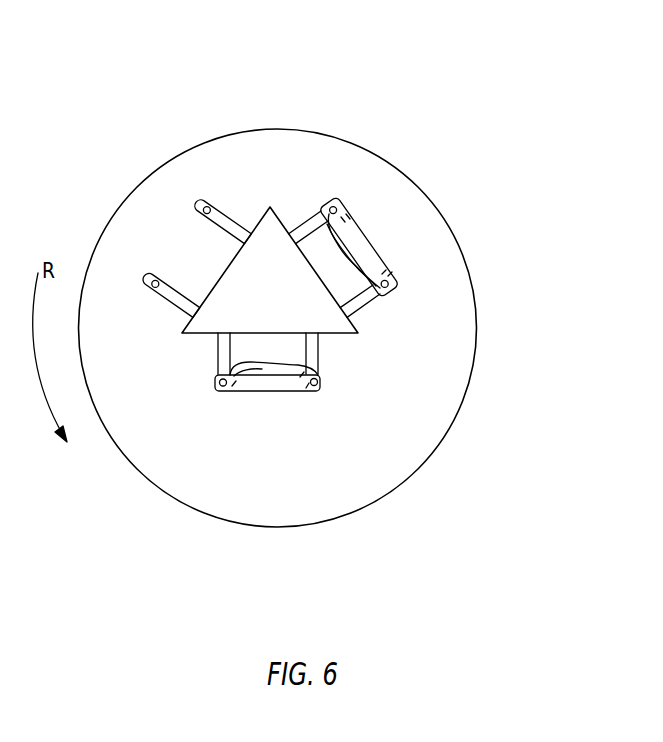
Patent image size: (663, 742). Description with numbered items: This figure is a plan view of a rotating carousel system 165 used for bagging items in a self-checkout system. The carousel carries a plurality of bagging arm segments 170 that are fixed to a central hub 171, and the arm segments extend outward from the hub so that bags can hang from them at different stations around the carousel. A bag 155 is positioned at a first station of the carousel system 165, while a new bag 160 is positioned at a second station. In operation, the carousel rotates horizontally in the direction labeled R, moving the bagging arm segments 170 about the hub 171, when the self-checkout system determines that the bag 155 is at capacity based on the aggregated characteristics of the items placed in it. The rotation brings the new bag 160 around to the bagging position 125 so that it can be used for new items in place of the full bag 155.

The rotating carousel system 165 is at (560, 114).
The bagging arm segments 170 is at (300, 209).
The hub 171 is at (347, 334).
The bag 155 is at (558, 272).
The new bag 160 is at (297, 393).
The bagging position 125 is at (144, 480).